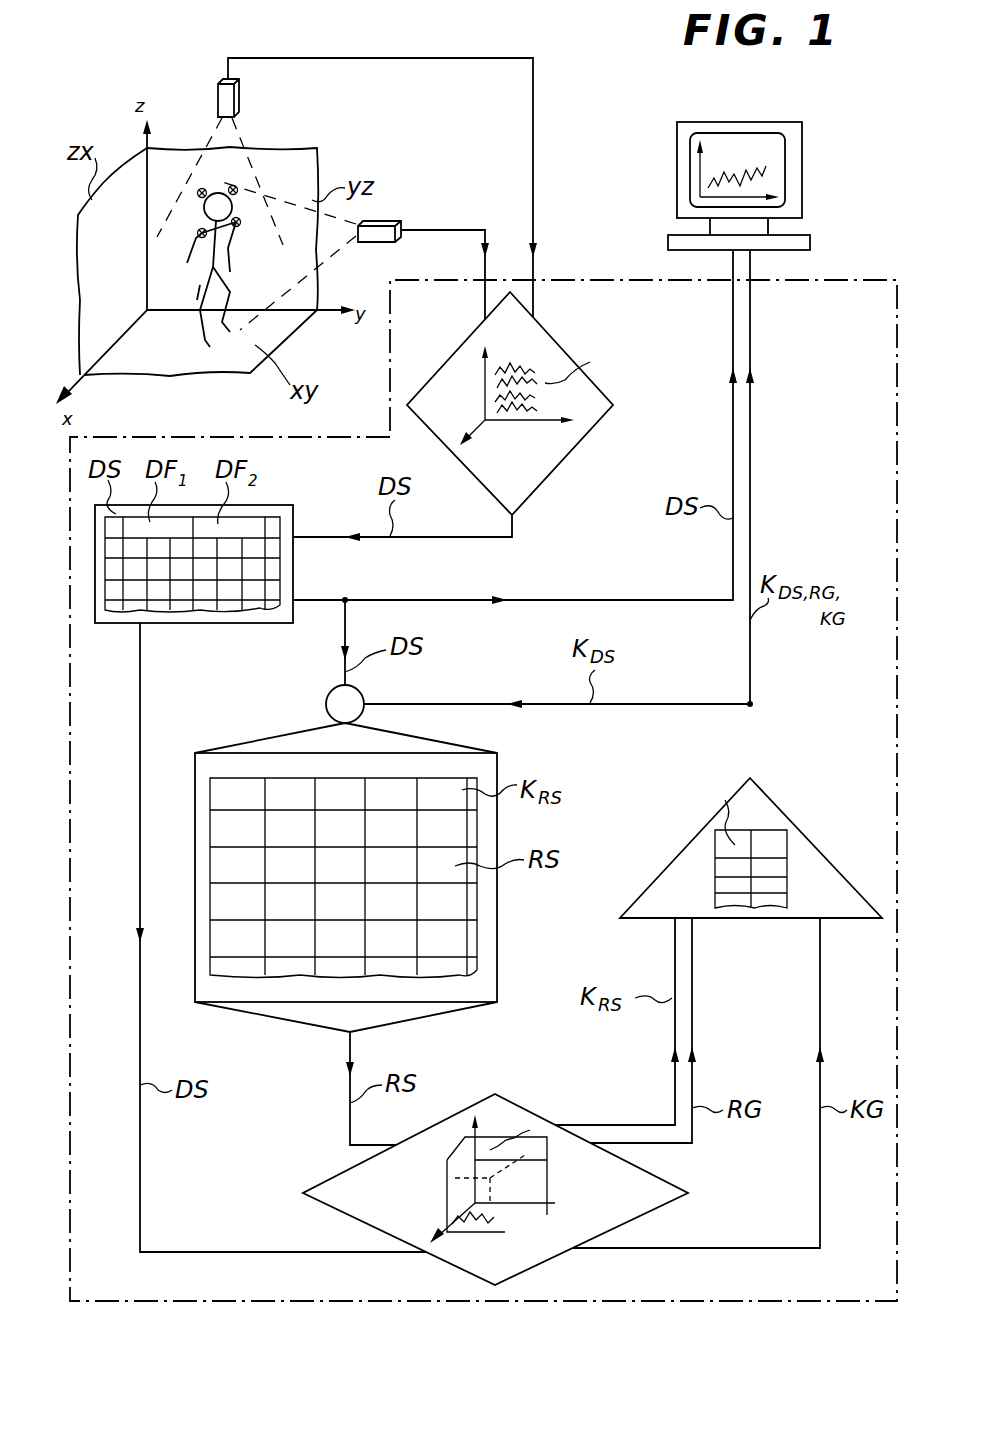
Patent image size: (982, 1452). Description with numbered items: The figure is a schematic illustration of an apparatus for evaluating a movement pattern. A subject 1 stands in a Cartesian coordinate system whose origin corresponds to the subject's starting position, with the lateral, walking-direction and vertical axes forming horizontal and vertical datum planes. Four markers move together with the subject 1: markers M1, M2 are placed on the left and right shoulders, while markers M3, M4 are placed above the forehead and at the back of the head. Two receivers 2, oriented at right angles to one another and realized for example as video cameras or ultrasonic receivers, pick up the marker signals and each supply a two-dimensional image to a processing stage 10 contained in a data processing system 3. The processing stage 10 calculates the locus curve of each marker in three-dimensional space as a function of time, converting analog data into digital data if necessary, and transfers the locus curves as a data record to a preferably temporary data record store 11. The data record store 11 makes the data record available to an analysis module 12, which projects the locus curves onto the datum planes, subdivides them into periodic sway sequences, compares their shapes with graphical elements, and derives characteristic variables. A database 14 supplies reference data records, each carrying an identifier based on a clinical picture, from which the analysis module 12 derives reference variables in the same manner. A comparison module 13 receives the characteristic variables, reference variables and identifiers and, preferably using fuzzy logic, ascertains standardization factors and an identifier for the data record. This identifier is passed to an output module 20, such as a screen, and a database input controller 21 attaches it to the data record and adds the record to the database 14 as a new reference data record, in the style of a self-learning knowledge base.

The subject 1 is at (196, 318).
The receiver 2 is at (218, 100).
The data processing system 3 is at (848, 280).
The processing stage 10 is at (572, 447).
The data record store 11 is at (225, 623).
The analysis module 12 is at (527, 1112).
The comparison module 13 is at (790, 815).
The database 14 is at (497, 940).
The output module 20 is at (802, 178).
The database input controller 21 is at (333, 700).
The marker M1 is at (240, 220).
The marker M2 is at (198, 235).
The marker M3 is at (236, 186).
The marker M4 is at (202, 189).